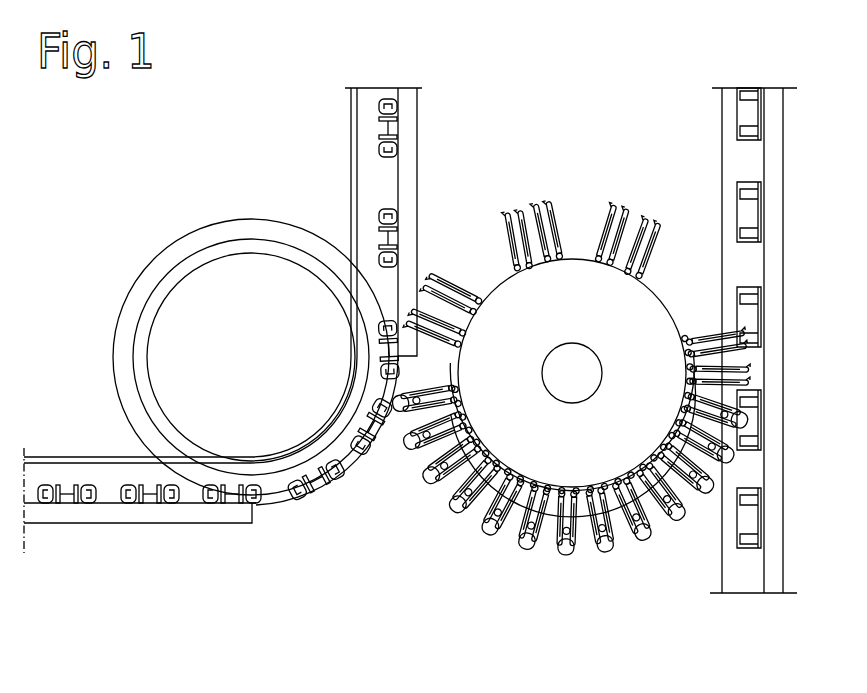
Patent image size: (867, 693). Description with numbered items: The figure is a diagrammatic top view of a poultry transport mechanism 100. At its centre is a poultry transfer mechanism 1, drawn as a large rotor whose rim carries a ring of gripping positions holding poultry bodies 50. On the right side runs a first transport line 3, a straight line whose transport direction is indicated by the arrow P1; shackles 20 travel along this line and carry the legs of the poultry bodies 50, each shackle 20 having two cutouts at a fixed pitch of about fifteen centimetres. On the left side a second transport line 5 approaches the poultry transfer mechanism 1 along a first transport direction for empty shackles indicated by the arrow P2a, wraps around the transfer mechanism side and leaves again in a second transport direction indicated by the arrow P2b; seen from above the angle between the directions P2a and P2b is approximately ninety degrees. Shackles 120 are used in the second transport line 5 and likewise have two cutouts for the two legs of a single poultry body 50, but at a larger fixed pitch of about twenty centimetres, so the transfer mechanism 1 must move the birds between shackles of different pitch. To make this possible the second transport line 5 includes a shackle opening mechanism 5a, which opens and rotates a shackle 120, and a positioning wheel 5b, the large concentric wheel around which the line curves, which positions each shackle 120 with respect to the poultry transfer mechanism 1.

The poultry transport mechanism 100 is at (583, 92).
The poultry transfer mechanism 1 is at (484, 549).
The poultry body 50 is at (648, 547).
The second transport line 5 is at (321, 503).
The shackle opening mechanism 5a is at (97, 452).
The positioning wheel 5b is at (175, 228).
The shackle 120 is at (69, 503).
The first transport line 3 is at (752, 606).
The shackle 20 is at (750, 525).
The transport direction P1 is at (808, 357).
The first transport direction P2a is at (203, 543).
The second transport direction P2b is at (335, 208).